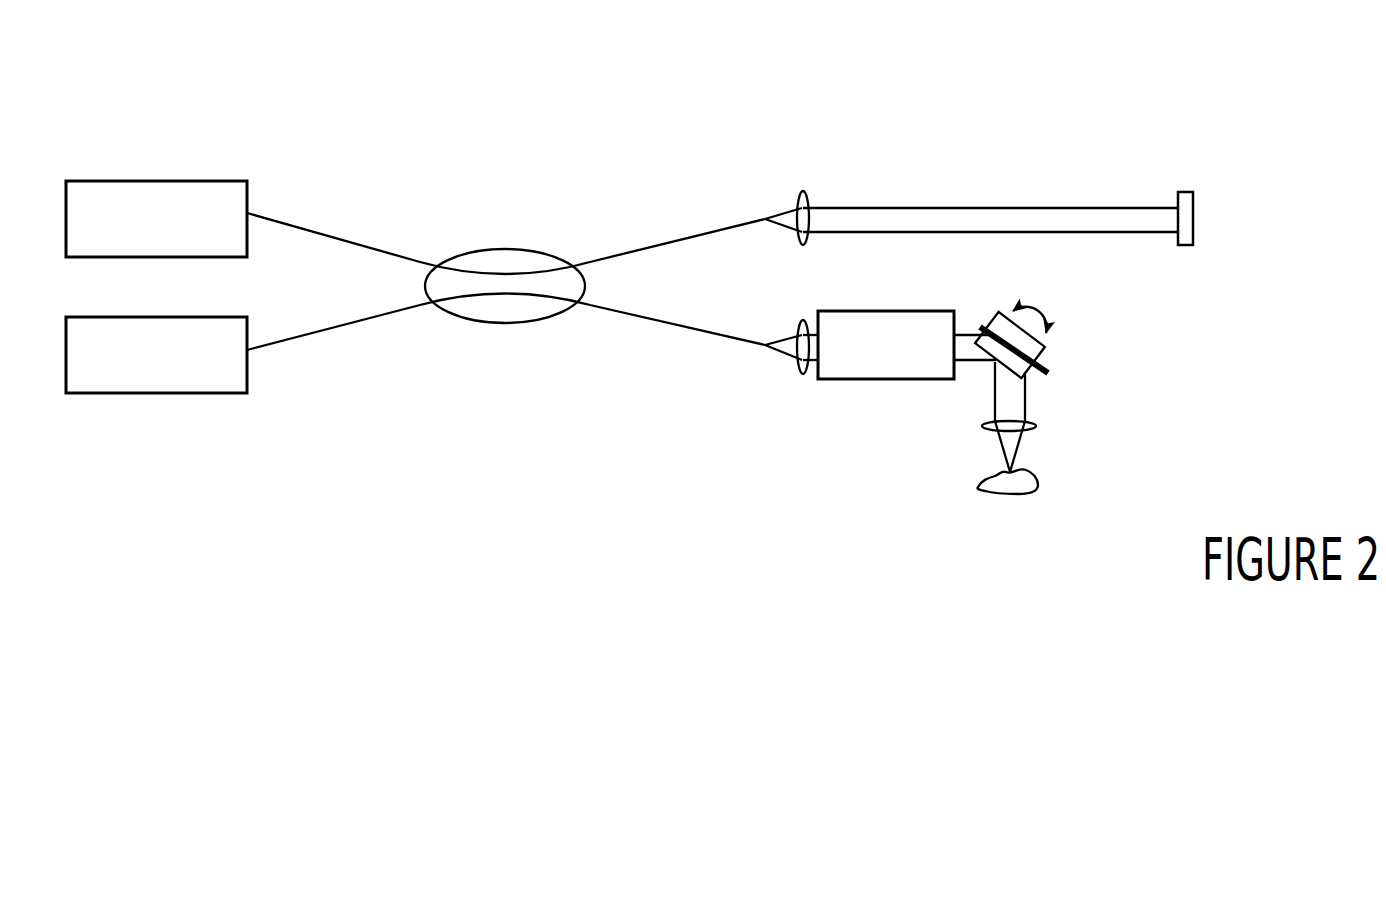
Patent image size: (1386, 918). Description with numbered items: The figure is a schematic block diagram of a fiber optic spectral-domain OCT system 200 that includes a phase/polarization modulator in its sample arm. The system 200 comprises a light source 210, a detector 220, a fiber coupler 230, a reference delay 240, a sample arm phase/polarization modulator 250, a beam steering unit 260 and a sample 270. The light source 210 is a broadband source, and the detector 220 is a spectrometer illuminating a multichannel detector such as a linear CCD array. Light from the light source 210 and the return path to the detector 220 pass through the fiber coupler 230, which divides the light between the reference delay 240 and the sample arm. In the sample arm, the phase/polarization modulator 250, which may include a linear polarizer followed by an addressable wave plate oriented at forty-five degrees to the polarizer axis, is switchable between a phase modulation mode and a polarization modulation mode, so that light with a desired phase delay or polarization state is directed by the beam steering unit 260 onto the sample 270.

The fiber optic SDOCT system 200 is at (161, 118).
The light source 210 is at (136, 247).
The detector 220 is at (136, 383).
The fiber coupler 230 is at (506, 257).
The reference delay 240 is at (979, 183).
The sample arm phase/polarization modulator 250 is at (853, 386).
The beam steering unit 260 is at (1093, 364).
The sample 270 is at (1072, 461).